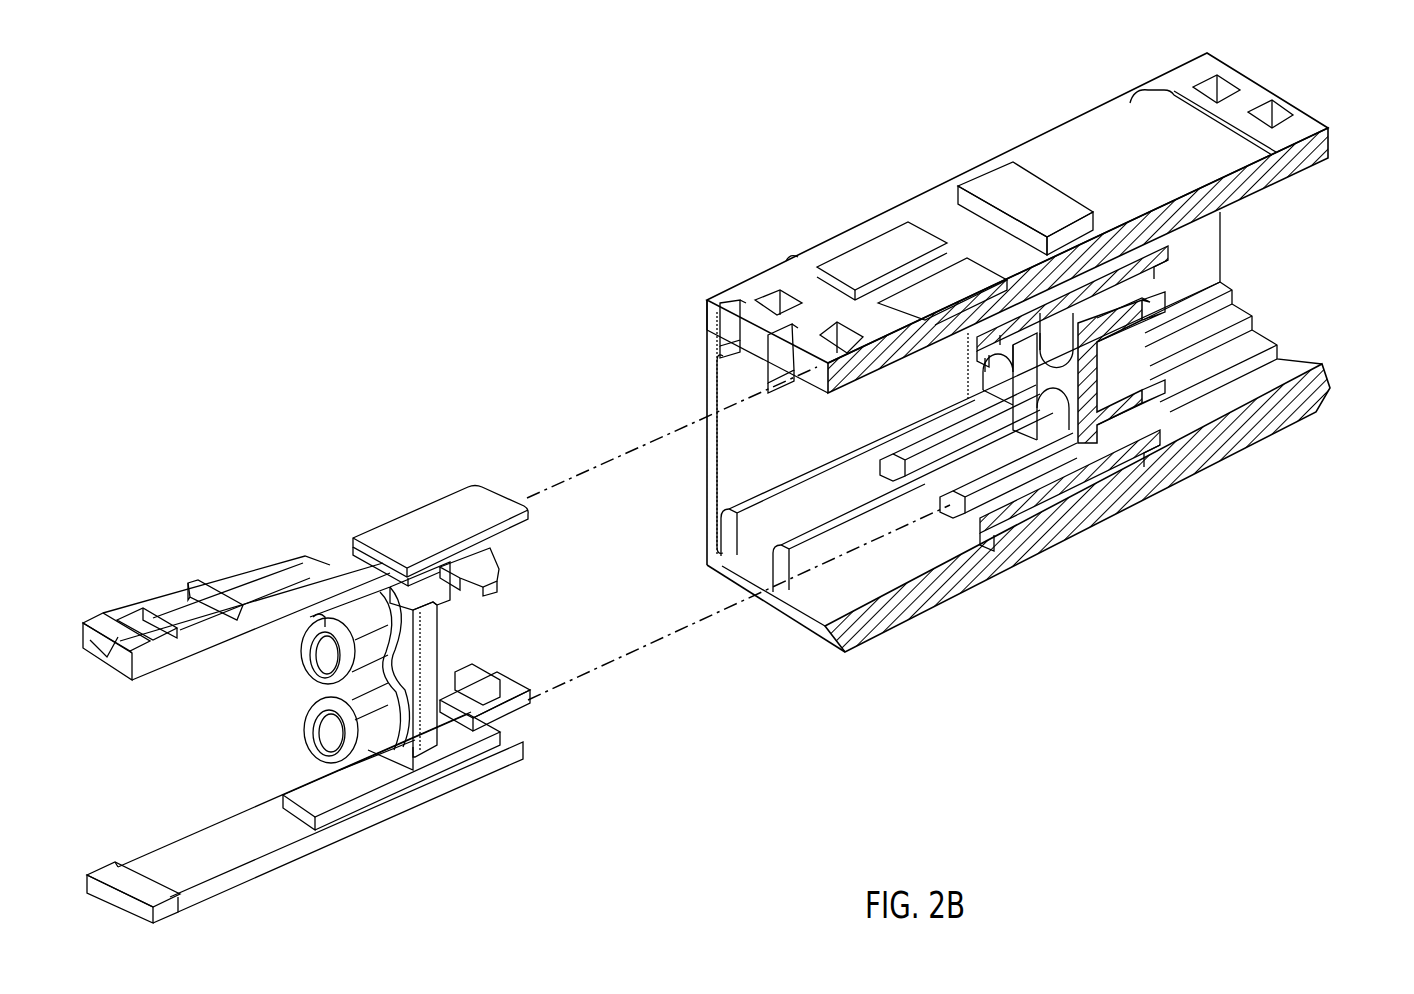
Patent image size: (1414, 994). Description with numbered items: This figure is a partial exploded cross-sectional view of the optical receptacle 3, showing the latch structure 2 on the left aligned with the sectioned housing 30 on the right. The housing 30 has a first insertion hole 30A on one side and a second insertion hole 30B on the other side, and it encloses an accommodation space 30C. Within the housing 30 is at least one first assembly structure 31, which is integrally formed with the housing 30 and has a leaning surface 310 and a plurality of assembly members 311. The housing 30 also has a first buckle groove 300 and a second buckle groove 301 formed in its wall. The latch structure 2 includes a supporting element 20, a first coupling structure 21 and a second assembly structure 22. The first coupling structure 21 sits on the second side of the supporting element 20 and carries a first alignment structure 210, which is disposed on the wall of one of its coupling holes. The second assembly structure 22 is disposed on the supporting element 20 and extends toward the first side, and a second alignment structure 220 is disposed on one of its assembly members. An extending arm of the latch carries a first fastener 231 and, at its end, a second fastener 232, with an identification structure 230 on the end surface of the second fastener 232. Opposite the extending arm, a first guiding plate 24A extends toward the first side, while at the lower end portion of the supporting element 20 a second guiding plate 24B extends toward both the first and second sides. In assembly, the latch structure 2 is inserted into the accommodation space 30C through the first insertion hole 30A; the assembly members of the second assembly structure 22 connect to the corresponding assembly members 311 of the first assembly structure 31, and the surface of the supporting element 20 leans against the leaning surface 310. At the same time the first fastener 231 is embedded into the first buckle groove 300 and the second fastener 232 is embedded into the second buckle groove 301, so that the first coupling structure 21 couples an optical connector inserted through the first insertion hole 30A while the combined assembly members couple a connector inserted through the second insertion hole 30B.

The latch structure 2 is at (493, 430).
The optical receptacle 3 is at (680, 272).
The supporting element 20 is at (425, 645).
The first coupling structure 21 is at (309, 706).
The second assembly structure 22 is at (510, 713).
The first guiding plate 24A is at (430, 483).
The second guiding plate 24B is at (351, 836).
The first alignment structure 210 is at (318, 622).
The second alignment structure 220 is at (480, 558).
The identification structure 230 is at (108, 662).
The first fastener 231 is at (203, 583).
The second fastener 232 is at (87, 623).
The housing 30 is at (1098, 142).
The first insertion hole 30A is at (791, 471).
The second insertion hole 30B is at (1293, 278).
The accommodation space 30C is at (926, 424).
The first buckle groove 300 is at (948, 292).
The second buckle groove 301 is at (740, 315).
The first assembly structure 31 is at (1130, 383).
The leaning surface 310 is at (1043, 377).
The assembly members 311 is at (1117, 318).